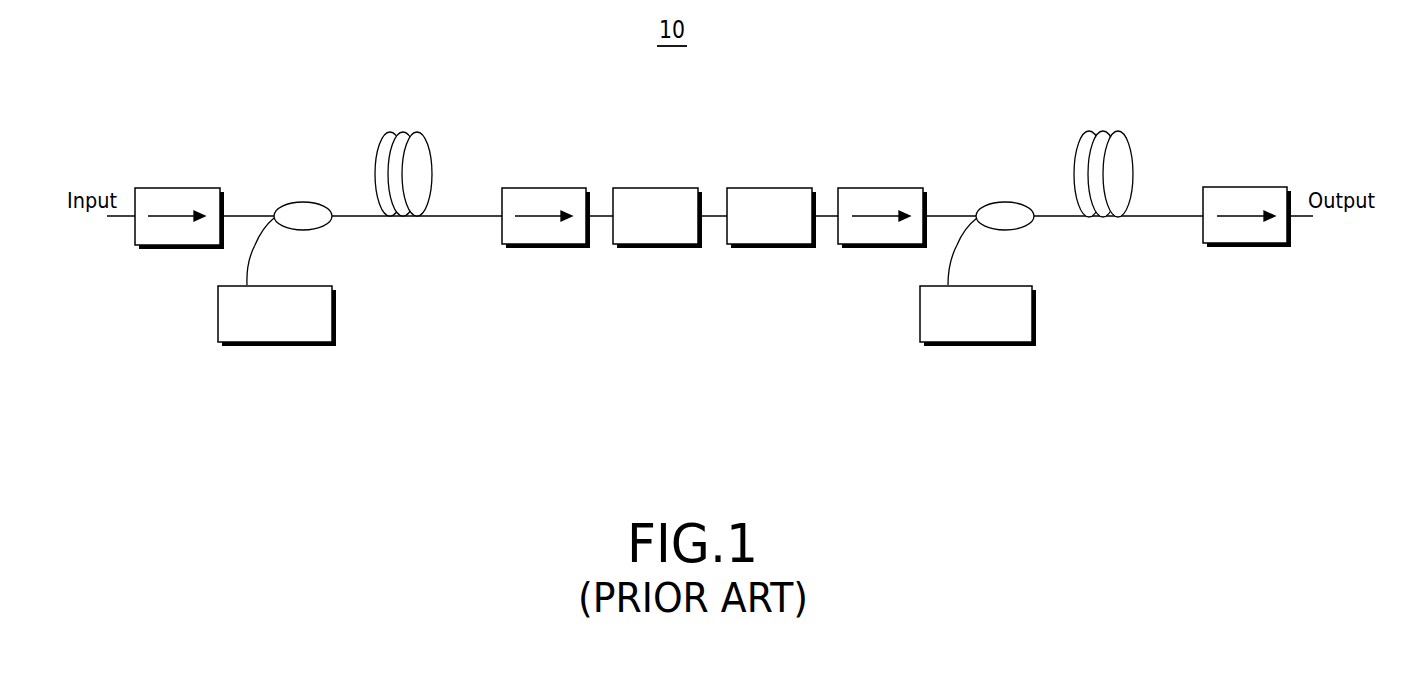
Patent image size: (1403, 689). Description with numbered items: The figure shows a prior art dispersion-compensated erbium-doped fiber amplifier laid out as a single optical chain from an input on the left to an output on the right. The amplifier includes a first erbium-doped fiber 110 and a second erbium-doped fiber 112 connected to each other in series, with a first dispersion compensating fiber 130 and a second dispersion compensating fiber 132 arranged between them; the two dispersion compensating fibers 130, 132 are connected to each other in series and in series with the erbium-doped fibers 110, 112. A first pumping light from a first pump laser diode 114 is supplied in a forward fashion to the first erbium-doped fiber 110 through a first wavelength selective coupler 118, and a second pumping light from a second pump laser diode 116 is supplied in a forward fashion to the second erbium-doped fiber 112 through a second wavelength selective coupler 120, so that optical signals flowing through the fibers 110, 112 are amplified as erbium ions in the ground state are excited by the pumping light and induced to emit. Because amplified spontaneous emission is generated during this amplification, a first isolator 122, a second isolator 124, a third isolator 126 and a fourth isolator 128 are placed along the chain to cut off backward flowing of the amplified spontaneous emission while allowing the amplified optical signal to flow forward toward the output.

The first erbium-doped fiber 110 is at (415, 133).
The second erbium-doped fiber 112 is at (1120, 133).
The first pump laser diode 114 is at (273, 342).
The second pump laser diode 116 is at (978, 342).
The first wavelength selective coupler 118 is at (275, 217).
The second wavelength selective coupler 120 is at (979, 208).
The first isolator 122 is at (173, 245).
The second isolator 124 is at (547, 244).
The third isolator 126 is at (880, 244).
The fourth isolator 128 is at (1248, 243).
The first dispersion compensating fiber 130 is at (662, 244).
The second dispersion compensating fiber 132 is at (773, 244).